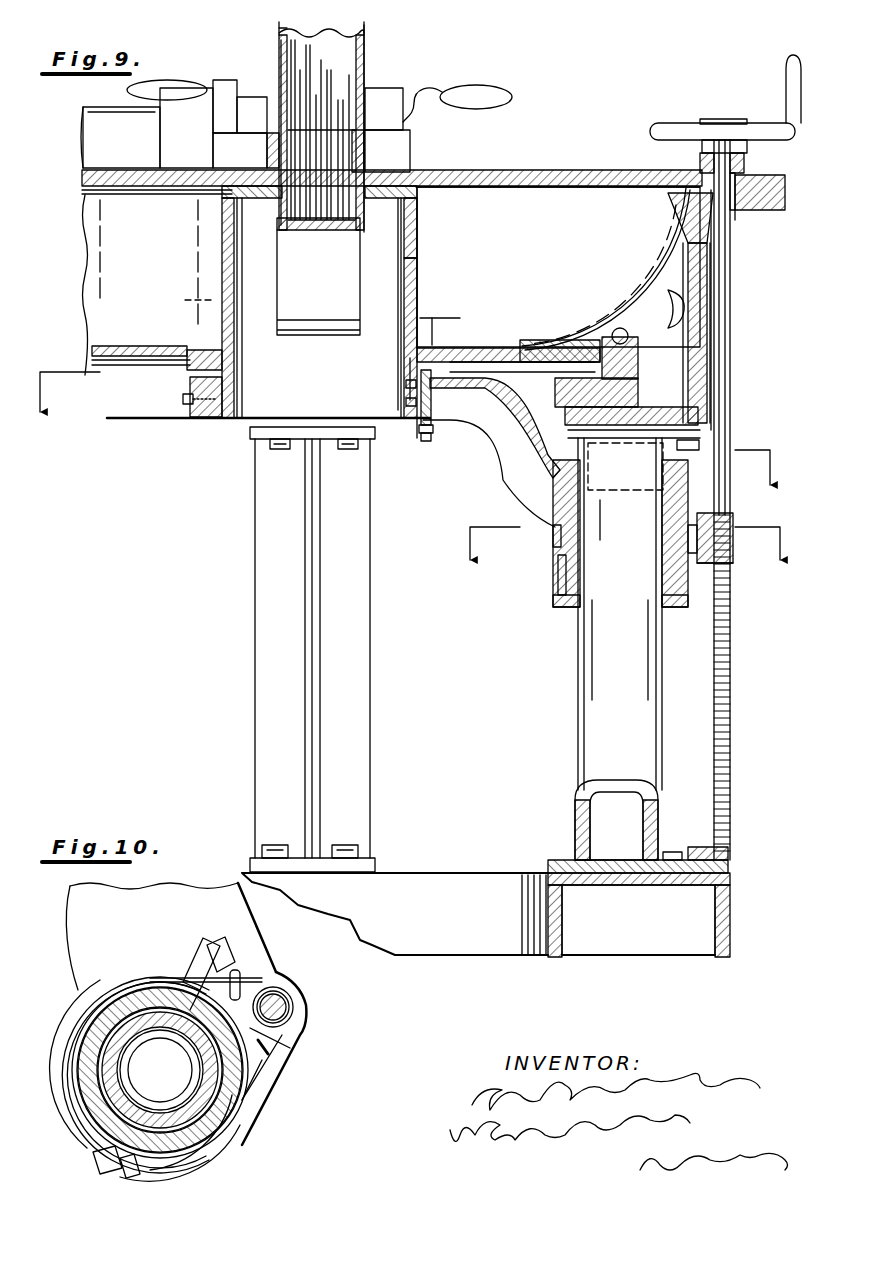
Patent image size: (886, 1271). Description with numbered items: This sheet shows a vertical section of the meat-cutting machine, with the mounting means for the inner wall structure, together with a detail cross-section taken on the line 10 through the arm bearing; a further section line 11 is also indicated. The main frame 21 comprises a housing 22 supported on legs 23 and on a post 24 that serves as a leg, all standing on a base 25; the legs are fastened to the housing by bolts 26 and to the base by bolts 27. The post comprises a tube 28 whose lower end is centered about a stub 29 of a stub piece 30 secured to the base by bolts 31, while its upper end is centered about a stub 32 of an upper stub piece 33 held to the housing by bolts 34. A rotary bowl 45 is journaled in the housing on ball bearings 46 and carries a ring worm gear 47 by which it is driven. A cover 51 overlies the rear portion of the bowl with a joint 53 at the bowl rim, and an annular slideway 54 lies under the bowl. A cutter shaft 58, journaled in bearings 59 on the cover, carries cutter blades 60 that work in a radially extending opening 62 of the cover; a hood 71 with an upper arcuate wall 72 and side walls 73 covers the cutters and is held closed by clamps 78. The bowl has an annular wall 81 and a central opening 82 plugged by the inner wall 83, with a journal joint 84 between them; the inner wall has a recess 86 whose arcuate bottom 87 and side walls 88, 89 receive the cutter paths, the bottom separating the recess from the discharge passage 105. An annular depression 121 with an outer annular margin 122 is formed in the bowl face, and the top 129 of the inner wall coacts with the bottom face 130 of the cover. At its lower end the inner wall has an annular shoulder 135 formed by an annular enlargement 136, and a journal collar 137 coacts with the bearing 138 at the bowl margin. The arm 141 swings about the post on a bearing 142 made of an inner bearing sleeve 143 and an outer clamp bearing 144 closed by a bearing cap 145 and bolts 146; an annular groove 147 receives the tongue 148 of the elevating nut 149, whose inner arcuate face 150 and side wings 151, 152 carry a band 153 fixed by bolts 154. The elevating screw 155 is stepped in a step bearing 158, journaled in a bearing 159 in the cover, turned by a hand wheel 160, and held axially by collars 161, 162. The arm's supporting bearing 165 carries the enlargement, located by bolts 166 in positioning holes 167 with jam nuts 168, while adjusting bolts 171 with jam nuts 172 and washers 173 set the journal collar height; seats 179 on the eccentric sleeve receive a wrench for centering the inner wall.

In FIG. 9, the section line 10— 10 is at (637, 552).
In FIG. 9, the section line 11— 11 is at (418, 432).
In FIG. 9, the main frame 21 is at (712, 396).
In FIG. 9, the housing 22 is at (708, 360).
In FIG. 9, the legs 23 is at (356, 633).
In FIG. 9, the post 24 is at (580, 700).
In FIG. 10, the post 24 is at (200, 1127).
In FIG. 9, the base 25 is at (449, 873).
In FIG. 10, the base 25 is at (135, 893).
In FIG. 9, the bolts 26 is at (360, 450).
In FIG. 9, the bolts 27 is at (352, 846).
In FIG. 9, the tube 28 is at (576, 815).
In FIG. 10, the tube 28 is at (107, 1073).
In FIG. 9, the stub 29 is at (594, 873).
In FIG. 10, the stub 29 is at (133, 1100).
In FIG. 9, the stub piece 30 is at (640, 873).
In FIG. 10, the stub piece 30 is at (132, 972).
In FIG. 9, the bolts 31 is at (674, 852).
In FIG. 9, the stub 32 is at (599, 520).
In FIG. 9, the upper stub piece 33 is at (640, 408).
In FIG. 9, the bolts 34 is at (701, 447).
In FIG. 9, the rotary bowl 45 is at (582, 212).
In FIG. 9, the ball bearings 46 is at (628, 342).
In FIG. 9, the ring worm gear 47 is at (667, 302).
In FIG. 9, the cover 51 is at (536, 182).
In FIG. 9, the joint 53 is at (680, 198).
In FIG. 9, the annular slideway 54 is at (700, 262).
In FIG. 9, the cutter shaft 58 is at (384, 109).
In FIG. 9, the bearings 59 is at (190, 140).
In FIG. 9, the cutter blades 60 is at (358, 76).
In FIG. 9, the radially extending opening 62 is at (381, 151).
In FIG. 9, the hood 71 is at (366, 32).
In FIG. 9, the upper arcuate wall 72 is at (290, 32).
In FIG. 9, the side walls 73 is at (283, 64).
In FIG. 9, the clamps 78 is at (448, 90).
In FIG. 9, the annular wall 81 is at (608, 330).
In FIG. 9, the central opening 82 is at (201, 350).
In FIG. 9, the inner wall 83 is at (418, 276).
In FIG. 9, the journal joint 84 is at (222, 364).
In FIG. 9, the recess 86 is at (362, 224).
In FIG. 9, the bottom 87 is at (323, 230).
In FIG. 9, the side wall 88 is at (362, 216).
In FIG. 9, the side wall 89 is at (278, 204).
In FIG. 9, the discharge passage 105 is at (330, 382).
In FIG. 9, the annular depression 121 is at (473, 354).
In FIG. 9, the outer annular margin 122 is at (518, 354).
In FIG. 9, the top 129 is at (228, 192).
In FIG. 9, the bottom face 130 is at (268, 165).
In FIG. 9, the annular shoulder 135 is at (410, 380).
In FIG. 9, the annular enlargement 136 is at (412, 404).
In FIG. 9, the journal collar 137 is at (410, 360).
In FIG. 9, the bearing 138 is at (438, 333).
In FIG. 9, the arm 141 is at (490, 462).
In FIG. 9, the bearing 142 is at (558, 606).
In FIG. 10, the bearing 142 is at (157, 970).
In FIG. 9, the inner bearing sleeve 143 is at (580, 570).
In FIG. 10, the inner bearing sleeve 143 is at (97, 1097).
In FIG. 9, the outer clamp bearing 144 is at (556, 566).
In FIG. 10, the outer clamp bearing 144 is at (127, 997).
In FIG. 9, the bearing cap 145 is at (680, 607).
In FIG. 10, the bearing cap 145 is at (217, 1107).
In FIG. 10, the bolts 146 is at (233, 967).
In FIG. 9, the annular groove 147 is at (580, 536).
In FIG. 10, the annular groove 147 is at (82, 1010).
In FIG. 9, the tongue 148 is at (730, 530).
In FIG. 10, the tongue 148 is at (277, 1030).
In FIG. 9, the elevating nut 149 is at (722, 562).
In FIG. 10, the elevating nut 149 is at (293, 1007).
In FIG. 10, the inner arcuate face 150 is at (250, 983).
In FIG. 10, the side wing 151 is at (213, 993).
In FIG. 10, the side wing 152 is at (253, 1067).
In FIG. 9, the band 153 is at (553, 536).
In FIG. 10, the band 153 is at (80, 988).
In FIG. 10, the bolts 154 is at (273, 1057).
In FIG. 9, the elevating screw 155 is at (730, 640).
In FIG. 10, the elevating screw 155 is at (283, 1015).
In FIG. 9, the step bearing 158 is at (728, 856).
In FIG. 9, the bearing 159 is at (745, 182).
In FIG. 9, the hand wheel 160 is at (760, 130).
In FIG. 9, the collar 161 is at (700, 160).
In FIG. 9, the collar 162 is at (737, 216).
In FIG. 9, the supporting bearing 165 is at (433, 406).
In FIG. 9, the locating and supporting bolts 166 is at (182, 399).
In FIG. 9, the positioning holes 167 is at (220, 392).
In FIG. 9, the jam nuts 168 is at (203, 420).
In FIG. 9, the adjusting bolts 171 is at (426, 442).
In FIG. 9, the jam nuts 172 is at (446, 437).
In FIG. 9, the washers 173 is at (414, 425).
In FIG. 9, the seats 179 is at (660, 458).